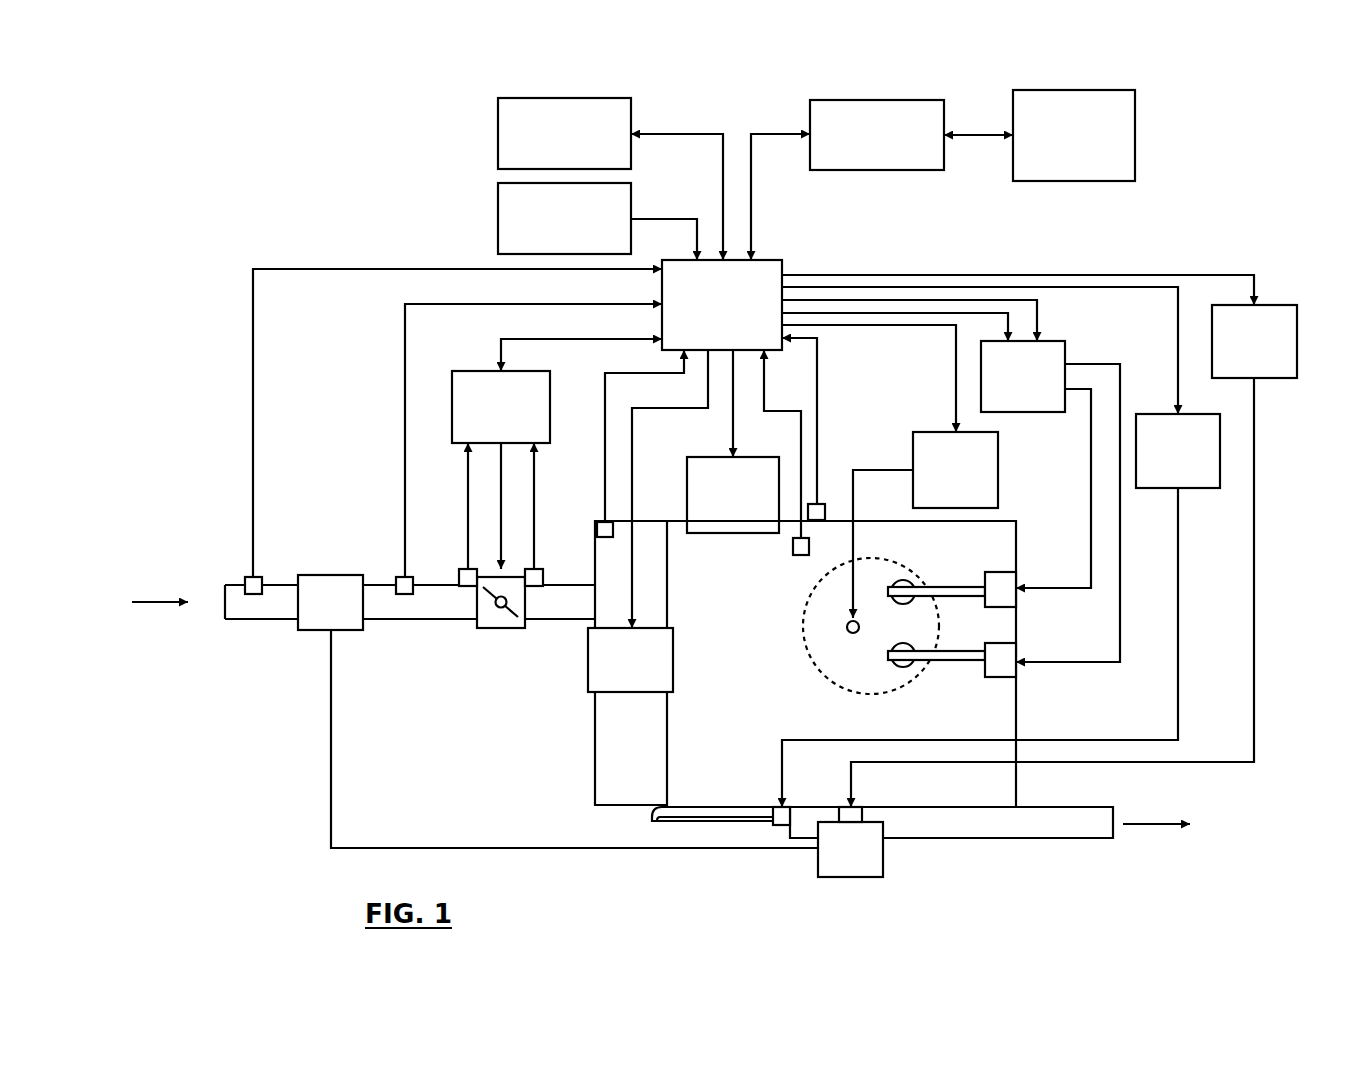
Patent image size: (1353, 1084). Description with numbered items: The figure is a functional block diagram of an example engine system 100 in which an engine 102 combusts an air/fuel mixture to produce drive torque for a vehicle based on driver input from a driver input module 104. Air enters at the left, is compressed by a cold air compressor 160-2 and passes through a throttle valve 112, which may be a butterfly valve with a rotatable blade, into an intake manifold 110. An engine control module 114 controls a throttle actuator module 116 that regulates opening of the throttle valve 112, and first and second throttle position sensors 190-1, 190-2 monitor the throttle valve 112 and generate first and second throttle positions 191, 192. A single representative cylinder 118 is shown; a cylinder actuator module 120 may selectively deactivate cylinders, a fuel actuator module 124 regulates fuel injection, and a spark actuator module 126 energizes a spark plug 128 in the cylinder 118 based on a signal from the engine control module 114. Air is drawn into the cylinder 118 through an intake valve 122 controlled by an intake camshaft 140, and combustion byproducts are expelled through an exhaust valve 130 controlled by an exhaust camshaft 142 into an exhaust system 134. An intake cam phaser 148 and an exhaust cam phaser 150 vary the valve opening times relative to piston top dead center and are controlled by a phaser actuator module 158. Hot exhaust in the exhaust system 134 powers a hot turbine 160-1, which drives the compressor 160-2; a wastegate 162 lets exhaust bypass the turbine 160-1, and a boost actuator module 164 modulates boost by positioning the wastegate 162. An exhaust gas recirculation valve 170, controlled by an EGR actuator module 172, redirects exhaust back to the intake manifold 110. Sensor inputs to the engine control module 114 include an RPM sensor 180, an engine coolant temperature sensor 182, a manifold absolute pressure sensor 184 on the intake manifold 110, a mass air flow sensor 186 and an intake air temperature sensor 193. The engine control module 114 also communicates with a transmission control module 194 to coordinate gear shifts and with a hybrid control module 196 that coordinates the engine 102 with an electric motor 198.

The engine system 100 is at (204, 159).
The engine 102 is at (1016, 531).
The driver input module 104 is at (498, 218).
The intake manifold 110 is at (595, 740).
The throttle valve 112 is at (497, 629).
The engine control module 114 is at (786, 261).
The throttle actuator module 116 is at (470, 371).
The cylinder 118 is at (829, 684).
The cylinder actuator module 120 is at (750, 457).
The intake valve 122 is at (905, 580).
The fuel actuator module 124 is at (655, 693).
The spark actuator module 126 is at (998, 467).
The spark plug 128 is at (847, 627).
The exhaust valve 130 is at (902, 668).
The exhaust system 134 is at (1086, 841).
The intake camshaft 140 is at (962, 587).
The exhaust camshaft 142 is at (962, 661).
The intake cam phaser 148 is at (1000, 572).
The exhaust cam phaser 150 is at (1002, 678).
The phaser actuator module 158 is at (1066, 349).
The hot turbine 160-1 is at (884, 858).
The cold air compressor 160-2 is at (318, 631).
The wastegate 162 is at (868, 812).
The boost actuator module 164 is at (1277, 378).
The exhaust gas recirculation valve 170 is at (781, 826).
The EGR actuator module 172 is at (1200, 488).
The RPM sensor 180 is at (820, 504).
The engine coolant temperature sensor 182 is at (801, 556).
The manifold absolute pressure sensor 184 is at (613, 522).
The mass air flow sensor 186 is at (398, 578).
The first throttle position sensor 190-1 is at (463, 590).
The second throttle position sensor 190-2 is at (535, 590).
The first throttle position 191 is at (466, 462).
The second throttle position 192 is at (536, 462).
The intake air temperature sensor 193 is at (247, 578).
The transmission control module 194 is at (498, 133).
The hybrid control module 196 is at (880, 170).
The electric motor 198 is at (1087, 181).